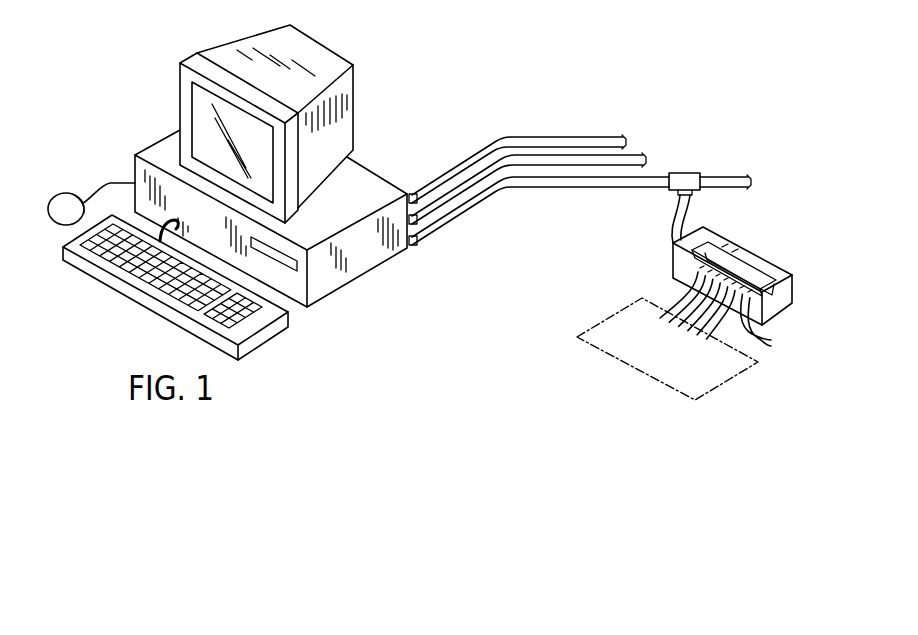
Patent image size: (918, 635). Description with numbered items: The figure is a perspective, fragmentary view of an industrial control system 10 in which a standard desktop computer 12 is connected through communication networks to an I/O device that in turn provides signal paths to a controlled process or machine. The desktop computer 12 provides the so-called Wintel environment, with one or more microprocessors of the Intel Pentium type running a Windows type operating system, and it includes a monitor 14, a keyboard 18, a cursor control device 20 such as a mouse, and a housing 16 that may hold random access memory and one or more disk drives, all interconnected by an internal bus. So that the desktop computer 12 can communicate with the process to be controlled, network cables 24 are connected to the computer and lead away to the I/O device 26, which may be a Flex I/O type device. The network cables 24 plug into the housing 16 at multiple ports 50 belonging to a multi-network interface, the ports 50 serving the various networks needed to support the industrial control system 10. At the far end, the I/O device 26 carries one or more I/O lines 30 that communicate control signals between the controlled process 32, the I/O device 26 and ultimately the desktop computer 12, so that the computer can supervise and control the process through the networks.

The industrial control system 10 is at (688, 114).
The desktop computer 12 is at (129, 101).
The monitor 14 is at (322, 67).
The housing 16 is at (347, 282).
The keyboard 18 is at (277, 338).
The cursor control device 20 is at (50, 207).
The network cables 24 is at (598, 150).
The I/O device 26 is at (762, 268).
The I/O lines 30 is at (728, 311).
The controlled process 32 is at (708, 378).
The ports 50 is at (418, 240).